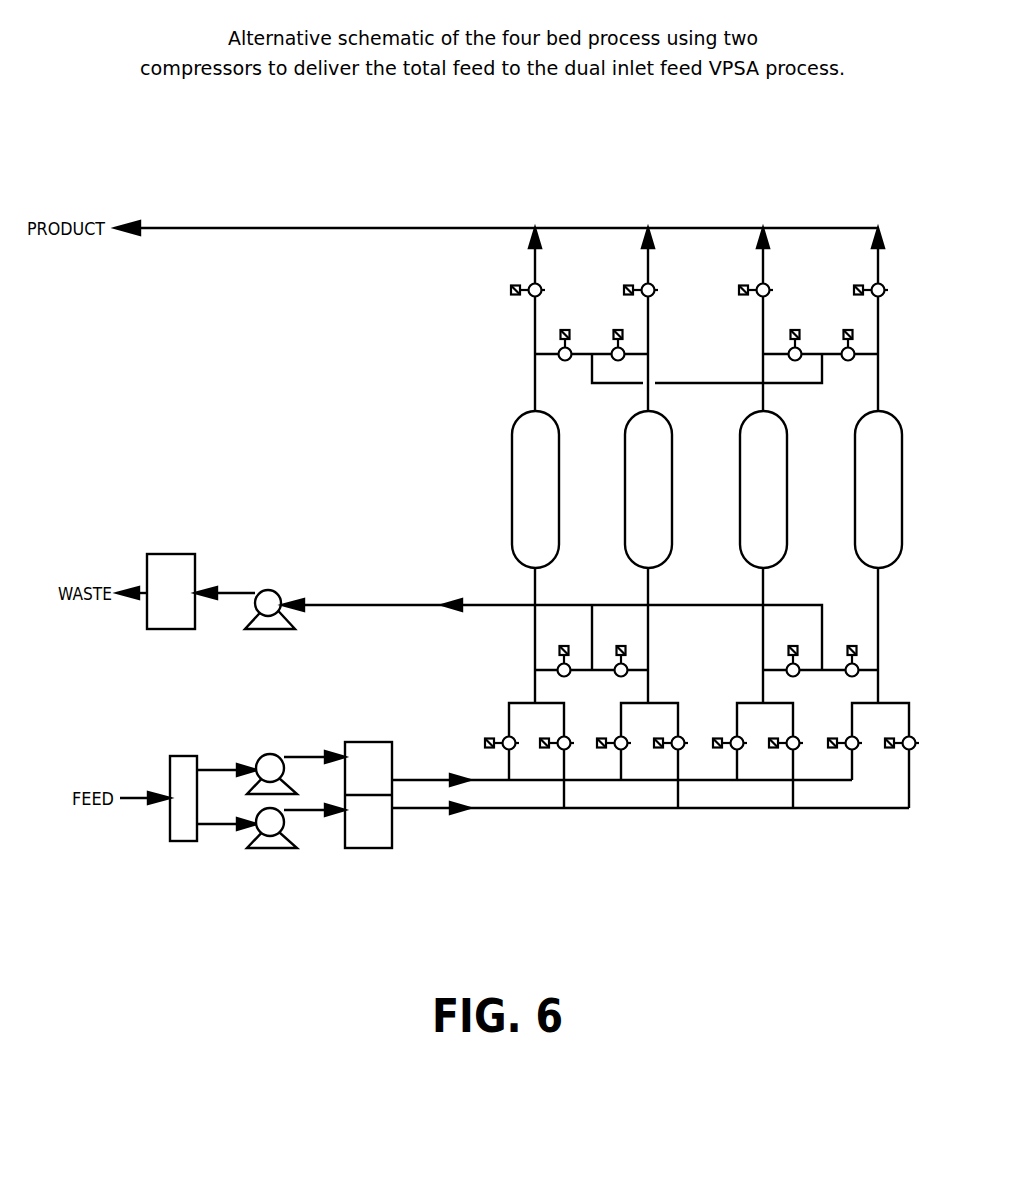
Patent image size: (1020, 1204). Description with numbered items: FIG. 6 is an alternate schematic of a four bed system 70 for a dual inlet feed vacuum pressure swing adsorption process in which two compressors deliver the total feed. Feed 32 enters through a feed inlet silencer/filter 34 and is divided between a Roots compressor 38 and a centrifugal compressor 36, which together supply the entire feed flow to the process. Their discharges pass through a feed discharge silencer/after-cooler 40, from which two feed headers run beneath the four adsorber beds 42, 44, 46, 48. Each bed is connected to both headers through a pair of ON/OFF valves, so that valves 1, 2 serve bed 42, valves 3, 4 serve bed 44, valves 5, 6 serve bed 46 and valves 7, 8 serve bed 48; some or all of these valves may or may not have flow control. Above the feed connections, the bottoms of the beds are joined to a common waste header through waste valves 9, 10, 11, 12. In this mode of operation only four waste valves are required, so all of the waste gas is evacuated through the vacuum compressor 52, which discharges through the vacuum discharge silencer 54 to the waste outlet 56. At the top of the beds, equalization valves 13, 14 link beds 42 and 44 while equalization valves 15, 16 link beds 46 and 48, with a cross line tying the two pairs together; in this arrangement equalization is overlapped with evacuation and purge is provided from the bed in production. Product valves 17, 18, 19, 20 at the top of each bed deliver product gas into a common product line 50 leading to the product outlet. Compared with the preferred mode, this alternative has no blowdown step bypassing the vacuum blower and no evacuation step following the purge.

The feed valve 1 is at (507, 743).
The feed valve 2 is at (562, 743).
The feed valve 3 is at (619, 743).
The feed valve 4 is at (676, 743).
The feed valve 5 is at (735, 743).
The feed valve 6 is at (791, 743).
The feed valve 7 is at (850, 743).
The feed valve 8 is at (907, 743).
The waste valve 9 is at (564, 674).
The waste valve 10 is at (621, 674).
The waste valve 11 is at (794, 674).
The waste valve 12 is at (853, 674).
The equalization valve 13 is at (566, 358).
The equalization valve 14 is at (619, 358).
The equalization valve 15 is at (796, 358).
The equalization valve 16 is at (849, 358).
The product valve 17 is at (539, 290).
The product valve 18 is at (652, 290).
The product valve 19 is at (767, 290).
The product valve 20 is at (882, 290).
The feed 32 is at (140, 800).
The feed inlet silencer/filter 34 is at (182, 843).
The centrifugal compressor 36 is at (278, 850).
The Roots compressor 38 is at (283, 758).
The feed discharge silencer/after-cooler 40 is at (372, 850).
The adsorber bed 42 is at (513, 548).
The adsorber bed 44 is at (626, 548).
The adsorber bed 46 is at (741, 548).
The adsorber bed 48 is at (856, 548).
The product line 50 is at (183, 228).
The vacuum compressor 52 is at (282, 592).
The vacuum discharge silencer 54 is at (180, 631).
The waste line 56 is at (144, 600).
The four bed system 70 is at (650, 809).